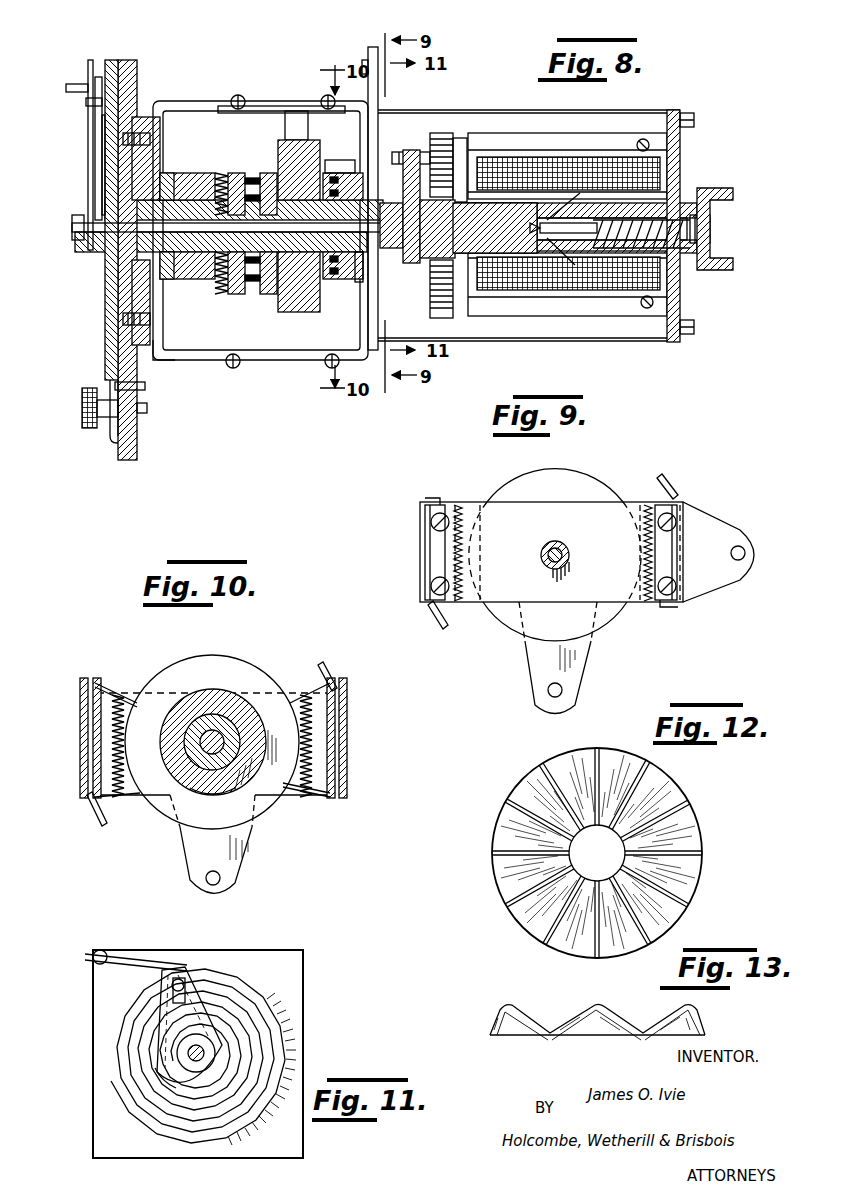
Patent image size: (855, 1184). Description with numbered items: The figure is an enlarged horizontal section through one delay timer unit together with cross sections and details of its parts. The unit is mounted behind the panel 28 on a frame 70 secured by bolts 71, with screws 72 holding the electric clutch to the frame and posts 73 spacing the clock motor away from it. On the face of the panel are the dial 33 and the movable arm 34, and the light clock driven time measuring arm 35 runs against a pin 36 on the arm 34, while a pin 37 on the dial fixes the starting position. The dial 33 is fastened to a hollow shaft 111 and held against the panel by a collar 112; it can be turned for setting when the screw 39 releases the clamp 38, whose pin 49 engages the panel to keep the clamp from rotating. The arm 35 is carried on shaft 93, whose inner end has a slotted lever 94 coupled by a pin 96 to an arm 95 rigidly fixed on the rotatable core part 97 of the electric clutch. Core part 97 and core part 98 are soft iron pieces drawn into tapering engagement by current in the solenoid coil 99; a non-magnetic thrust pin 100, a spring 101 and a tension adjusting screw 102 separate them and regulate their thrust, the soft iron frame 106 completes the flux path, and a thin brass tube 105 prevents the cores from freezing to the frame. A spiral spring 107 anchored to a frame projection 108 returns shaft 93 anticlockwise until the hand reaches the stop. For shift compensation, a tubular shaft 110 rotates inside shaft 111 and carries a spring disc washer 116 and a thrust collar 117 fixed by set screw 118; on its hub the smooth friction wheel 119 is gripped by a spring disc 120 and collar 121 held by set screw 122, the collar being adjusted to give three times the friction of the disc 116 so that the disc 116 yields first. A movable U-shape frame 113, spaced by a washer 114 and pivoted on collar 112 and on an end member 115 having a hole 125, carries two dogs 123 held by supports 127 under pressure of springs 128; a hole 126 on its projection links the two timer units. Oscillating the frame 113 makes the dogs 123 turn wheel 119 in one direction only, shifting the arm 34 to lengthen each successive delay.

In FIG. 8, the panel 28 is at (137, 445).
In FIG. 8, the dial 33 is at (106, 320).
In FIG. 8, the movable arm 34 is at (98, 80).
In FIG. 8, the time measuring arm 35 is at (88, 66).
In FIG. 8, the pin 36 is at (66, 87).
In FIG. 8, the pin 37 is at (88, 103).
In FIG. 8, the clamp 38 is at (110, 375).
In FIG. 8, the screw 39 is at (83, 392).
In FIG. 8, the pin 49 is at (145, 388).
In FIG. 8, the frame 70 is at (150, 348).
In FIG. 8, the bolts 71 is at (152, 138).
In FIG. 8, the screws 72 is at (680, 125).
In FIG. 8, the posts 73 is at (688, 112).
In FIG. 8, the shaft 93 is at (72, 228).
In FIG. 9, the shaft 93 is at (558, 545).
In FIG. 10, the shaft 93 is at (205, 740).
In FIG. 11, the shaft 93 is at (196, 1050).
In FIG. 8, the slotted lever 94 is at (405, 250).
In FIG. 11, the slotted lever 94 is at (162, 995).
In FIG. 8, the arm 95 is at (430, 145).
In FIG. 11, the arm 95 is at (162, 1074).
In FIG. 8, the pin 96 is at (395, 152).
In FIG. 11, the pin 96 is at (171, 985).
In FIG. 8, the core part 97 is at (478, 225).
In FIG. 11, the core part 97 is at (212, 1058).
In FIG. 8, the core part 98 is at (705, 262).
In FIG. 8, the solenoid coil 99 is at (535, 157).
In FIG. 8, the thrust pin 100 is at (540, 225).
In FIG. 8, the spring 101 is at (680, 215).
In FIG. 8, the tension adjusting screw 102 is at (710, 222).
In FIG. 8, the brass tube 105 is at (495, 290).
In FIG. 8, the frame 106 is at (468, 312).
In FIG. 11, the frame 106 is at (300, 1020).
In FIG. 8, the spiral spring 107 is at (430, 295).
In FIG. 11, the spiral spring 107 is at (262, 998).
In FIG. 8, the frame projection 108 is at (460, 138).
In FIG. 11, the frame projection 108 is at (105, 951).
In FIG. 8, the tubular shaft 110 is at (278, 270).
In FIG. 9, the tubular shaft 110 is at (548, 548).
In FIG. 10, the tubular shaft 110 is at (252, 720).
In FIG. 8, the hollow shaft 111 is at (190, 279).
In FIG. 8, the collar 112 is at (180, 173).
In FIG. 8, the U-shape frame 113 is at (205, 110).
In FIG. 10, the U-shape frame 113 is at (80, 740).
In FIG. 8, the washer 114 is at (166, 279).
In FIG. 8, the end member 115 is at (370, 50).
In FIG. 9, the end member 115 is at (755, 540).
In FIG. 8, the spring disc washer 116 is at (245, 275).
In FIG. 12, the spring disc washer 116 is at (675, 790).
In FIG. 13, the spring disc washer 116 is at (700, 1024).
In FIG. 8, the thrust collar 117 is at (224, 173).
In FIG. 10, the thrust collar 117 is at (215, 797).
In FIG. 8, the set screw 118 is at (252, 173).
In FIG. 8, the friction wheel 119 is at (348, 173).
In FIG. 9, the friction wheel 119 is at (505, 490).
In FIG. 10, the friction wheel 119 is at (225, 655).
In FIG. 8, the spring disc 120 is at (345, 279).
In FIG. 8, the collar 121 is at (352, 290).
In FIG. 10, the collar 121 is at (208, 714).
In FIG. 8, the set screw 122 is at (340, 160).
In FIG. 8, the dogs 123 is at (293, 111).
In FIG. 9, the dogs 123 is at (438, 500).
In FIG. 10, the dogs 123 is at (112, 683).
In FIG. 8, the hole 125 is at (365, 62).
In FIG. 9, the hole 125 is at (738, 546).
In FIG. 9, the hole 126 is at (548, 692).
In FIG. 10, the hole 126 is at (220, 882).
In FIG. 9, the supports 127 is at (672, 485).
In FIG. 10, the supports 127 is at (88, 815).
In FIG. 9, the springs 128 is at (658, 505).
In FIG. 10, the springs 128 is at (118, 797).